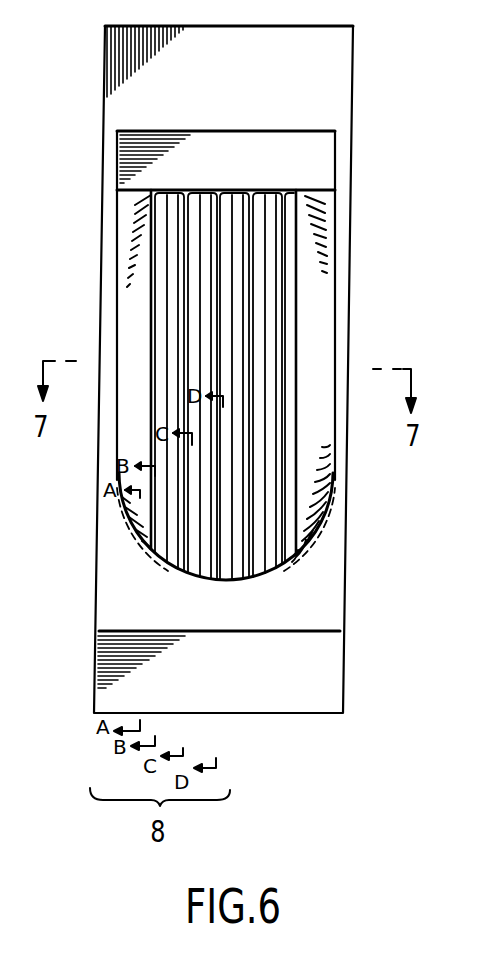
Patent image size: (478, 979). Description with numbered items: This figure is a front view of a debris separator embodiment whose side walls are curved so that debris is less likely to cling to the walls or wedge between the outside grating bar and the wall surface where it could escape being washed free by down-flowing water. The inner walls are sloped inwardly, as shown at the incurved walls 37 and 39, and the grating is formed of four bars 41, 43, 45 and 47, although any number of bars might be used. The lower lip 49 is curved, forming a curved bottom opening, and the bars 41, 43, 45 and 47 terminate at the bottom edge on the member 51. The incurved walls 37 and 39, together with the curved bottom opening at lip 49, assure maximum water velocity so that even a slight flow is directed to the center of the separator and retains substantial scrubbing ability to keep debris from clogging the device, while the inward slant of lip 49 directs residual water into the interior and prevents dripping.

The inner wall 37 is at (129, 307).
The inner wall 39 is at (313, 311).
The bar 41 is at (178, 182).
The bar 43 is at (207, 182).
The bar 45 is at (245, 182).
The bar 47 is at (278, 182).
The lower lip 49 is at (157, 550).
The member 51 is at (228, 568).